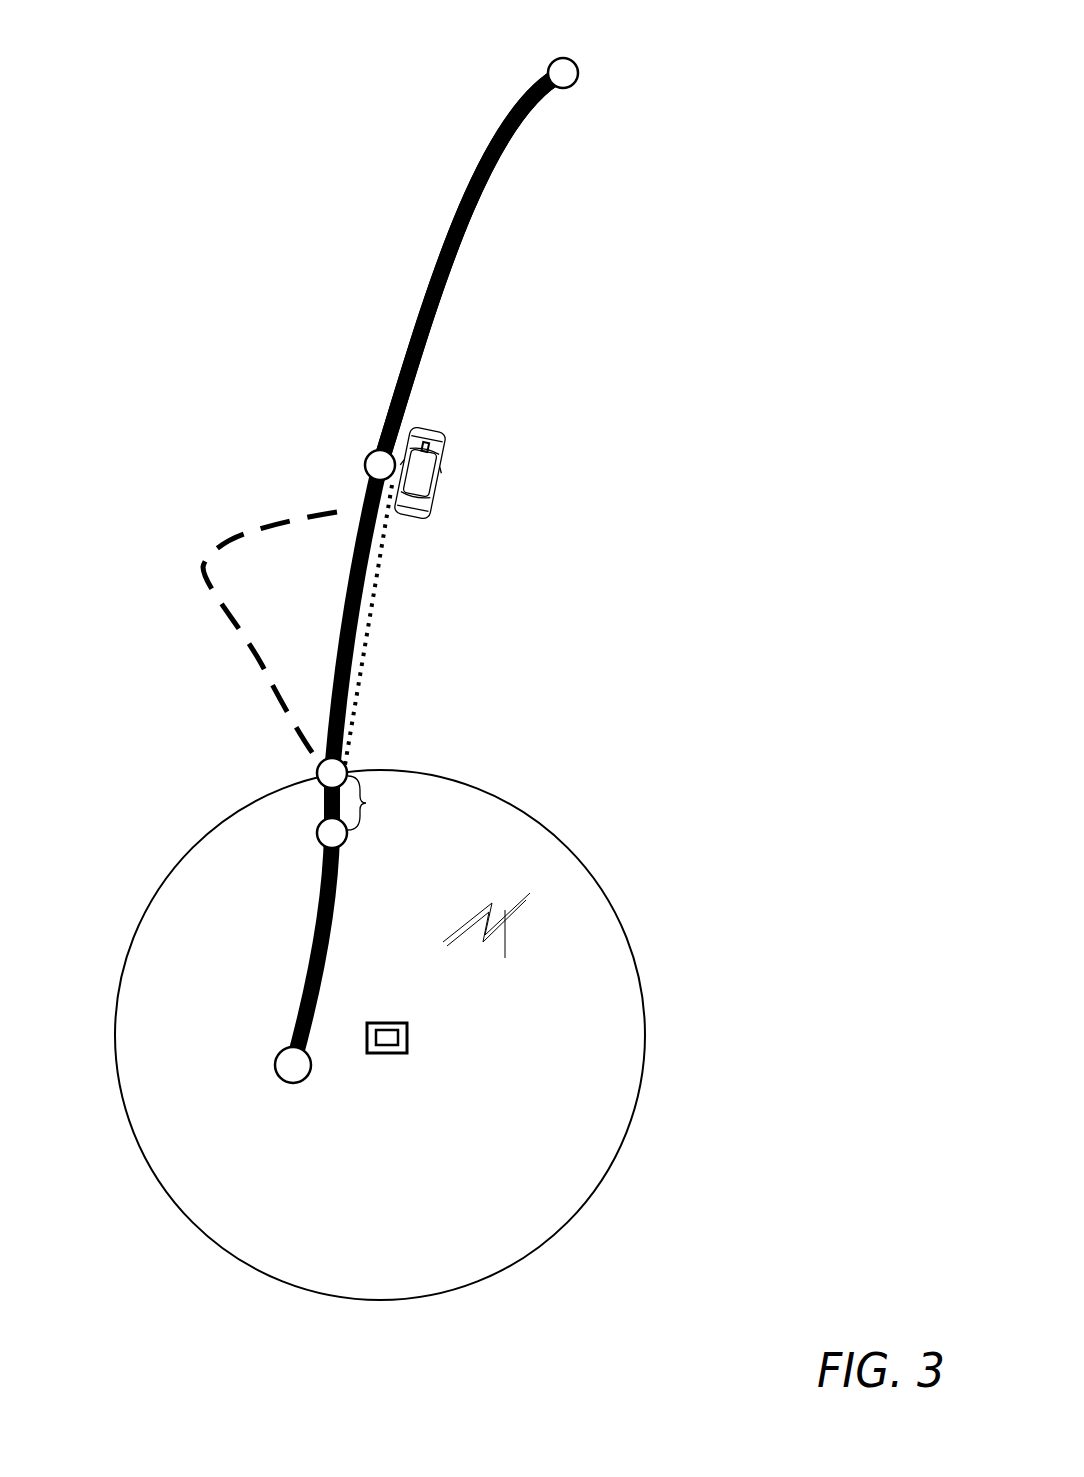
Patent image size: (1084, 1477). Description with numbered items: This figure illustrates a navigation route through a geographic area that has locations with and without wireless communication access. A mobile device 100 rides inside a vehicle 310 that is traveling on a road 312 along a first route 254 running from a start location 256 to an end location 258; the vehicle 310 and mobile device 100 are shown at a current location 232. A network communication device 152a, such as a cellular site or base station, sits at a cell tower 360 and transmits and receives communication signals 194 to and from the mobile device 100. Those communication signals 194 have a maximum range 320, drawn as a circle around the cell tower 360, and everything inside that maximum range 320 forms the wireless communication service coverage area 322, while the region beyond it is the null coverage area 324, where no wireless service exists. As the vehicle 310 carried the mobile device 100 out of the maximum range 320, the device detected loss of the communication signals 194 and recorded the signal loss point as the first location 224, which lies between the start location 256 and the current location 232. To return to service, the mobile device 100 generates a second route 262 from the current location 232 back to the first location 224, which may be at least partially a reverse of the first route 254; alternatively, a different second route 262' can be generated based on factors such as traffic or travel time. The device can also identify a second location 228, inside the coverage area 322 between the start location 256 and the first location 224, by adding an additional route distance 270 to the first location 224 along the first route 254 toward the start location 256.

The end location 258 is at (578, 73).
The first route 254 is at (455, 207).
The road 312 is at (425, 288).
The vehicle 310 is at (438, 430).
The mobile device 100 is at (427, 452).
The current location 232 is at (370, 460).
The second route 262 is at (428, 625).
The second route 262' is at (201, 639).
The null coverage area 324 is at (793, 699).
The first location 224 is at (318, 777).
The additional route distance 270 is at (366, 803).
The second location 228 is at (346, 842).
The communication signals 194 is at (486, 945).
The network communication device 152a is at (407, 1038).
The cell tower 360 is at (407, 1053).
The start location 256 is at (305, 1078).
The maximum range 320 is at (638, 1090).
The coverage area 322 is at (522, 1138).